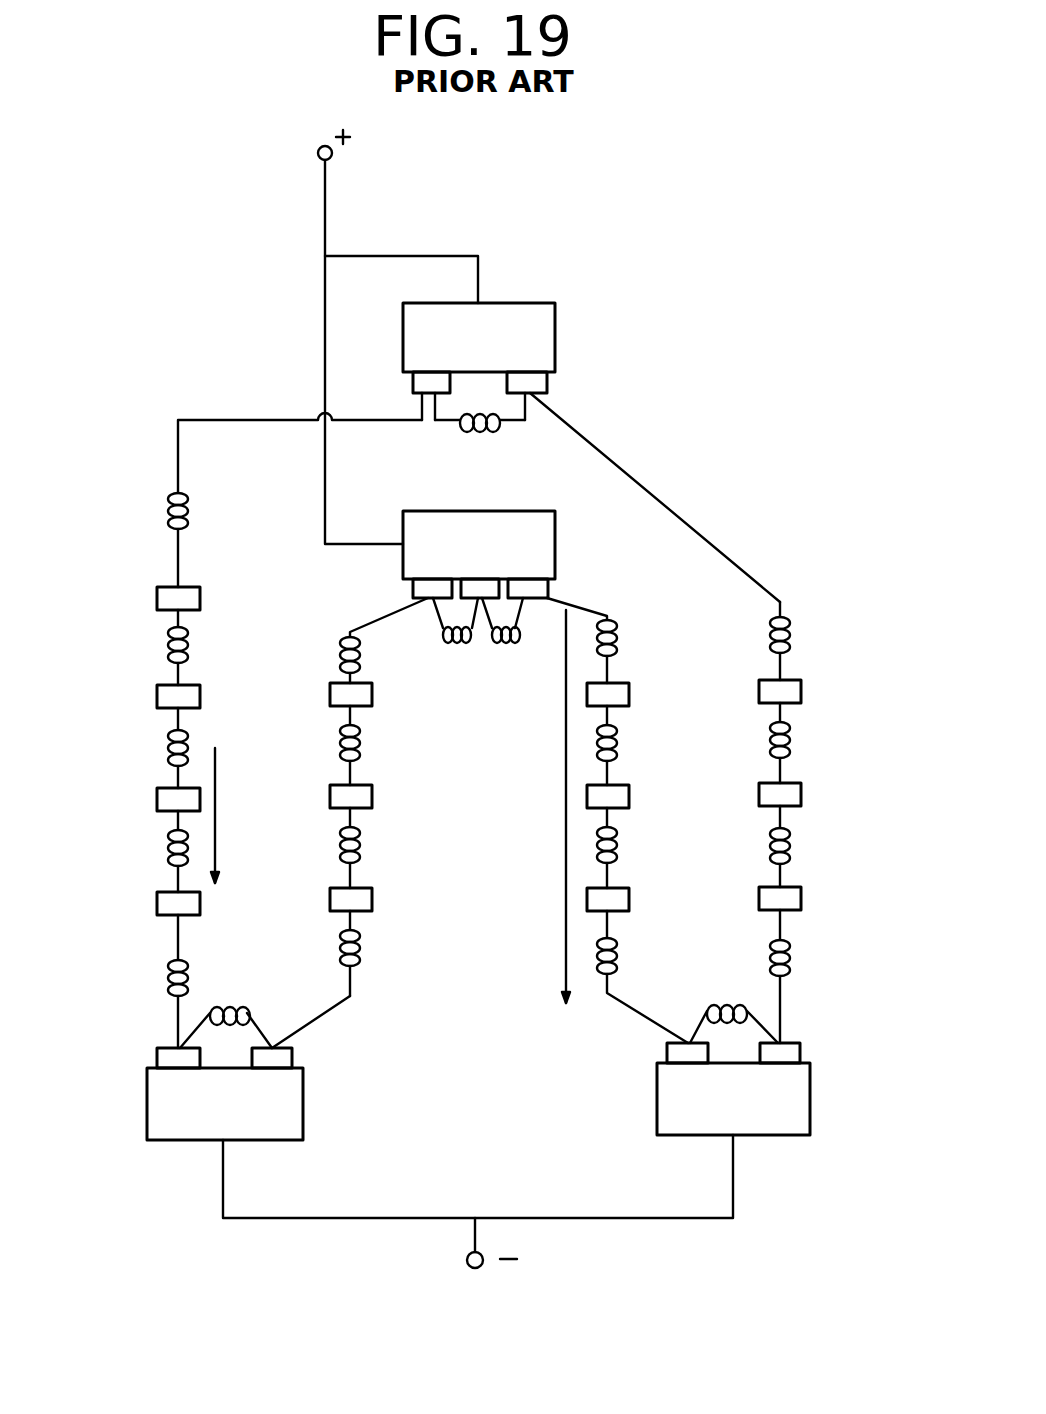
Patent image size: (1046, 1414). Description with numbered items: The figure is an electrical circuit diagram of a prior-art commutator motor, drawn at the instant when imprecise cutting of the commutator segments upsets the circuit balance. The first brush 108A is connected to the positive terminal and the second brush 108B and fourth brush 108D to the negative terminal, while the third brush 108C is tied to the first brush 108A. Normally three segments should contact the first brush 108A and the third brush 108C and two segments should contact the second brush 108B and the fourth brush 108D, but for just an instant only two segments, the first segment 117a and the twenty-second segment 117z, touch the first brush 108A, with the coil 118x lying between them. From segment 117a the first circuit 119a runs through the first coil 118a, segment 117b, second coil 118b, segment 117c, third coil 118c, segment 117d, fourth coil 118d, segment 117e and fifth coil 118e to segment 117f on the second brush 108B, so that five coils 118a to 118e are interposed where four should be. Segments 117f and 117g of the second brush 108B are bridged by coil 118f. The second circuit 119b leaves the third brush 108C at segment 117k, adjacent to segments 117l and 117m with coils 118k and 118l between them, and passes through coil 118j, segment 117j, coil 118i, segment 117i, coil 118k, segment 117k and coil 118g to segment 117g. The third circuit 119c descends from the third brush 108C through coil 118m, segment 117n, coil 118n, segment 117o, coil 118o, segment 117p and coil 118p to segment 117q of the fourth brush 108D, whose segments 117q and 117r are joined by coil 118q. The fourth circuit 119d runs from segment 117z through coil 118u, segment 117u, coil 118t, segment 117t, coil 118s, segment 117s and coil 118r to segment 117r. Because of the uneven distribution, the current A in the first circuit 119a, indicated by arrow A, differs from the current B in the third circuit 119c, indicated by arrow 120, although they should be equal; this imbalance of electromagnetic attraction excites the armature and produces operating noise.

The first brush 108A is at (555, 333).
The second brush 108B is at (147, 1130).
The third brush 108C is at (555, 530).
The fourth brush 108D is at (810, 1120).
The segment 117a is at (413, 383).
The segment 117b is at (157, 601).
The segment 117c is at (157, 699).
The segment 117d is at (157, 802).
The segment 117e is at (157, 904).
The segment 117f is at (157, 1058).
The segment 117g is at (292, 1052).
The segment 117i is at (372, 790).
The segment 117j is at (372, 693).
The segment 117k is at (413, 588).
The segment 117l is at (481, 590).
The segment 117m is at (527, 590).
The segment 117n is at (629, 690).
The segment 117o is at (629, 793).
The segment 117p is at (629, 896).
The segment 117q is at (667, 1059).
The segment 117r is at (800, 1052).
The segment 117s is at (801, 899).
The segment 117t is at (801, 795).
The segment 117u is at (801, 693).
The segment 117z is at (547, 380).
The first coil 118a is at (167, 527).
The second coil 118b is at (167, 648).
The third coil 118c is at (167, 753).
The fourth coil 118d is at (167, 857).
The fifth coil 118e is at (167, 993).
The coil 118f is at (232, 1007).
The coil 118g is at (360, 960).
The coil 118i is at (360, 750).
The coil 118j is at (342, 655).
The coil 118k is at (455, 645).
The coil 118l is at (503, 645).
The coil 118m is at (617, 630).
The coil 118n is at (617, 735).
The coil 118o is at (617, 835).
The coil 118p is at (617, 945).
The coil 118q is at (727, 1005).
The coil 118r is at (790, 955).
The coil 118s is at (790, 848).
The coil 118t is at (790, 742).
The coil 118u is at (790, 632).
The coil 118x is at (500, 426).
The first circuit 119a is at (152, 485).
The second circuit 119b is at (308, 622).
The third circuit 119c is at (729, 601).
The fourth circuit 119d is at (870, 573).
The current direction arrow 120 is at (563, 943).
The current A is at (217, 805).
The current B is at (563, 848).